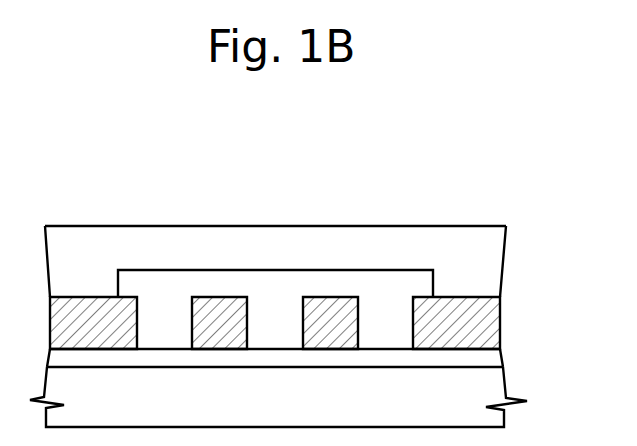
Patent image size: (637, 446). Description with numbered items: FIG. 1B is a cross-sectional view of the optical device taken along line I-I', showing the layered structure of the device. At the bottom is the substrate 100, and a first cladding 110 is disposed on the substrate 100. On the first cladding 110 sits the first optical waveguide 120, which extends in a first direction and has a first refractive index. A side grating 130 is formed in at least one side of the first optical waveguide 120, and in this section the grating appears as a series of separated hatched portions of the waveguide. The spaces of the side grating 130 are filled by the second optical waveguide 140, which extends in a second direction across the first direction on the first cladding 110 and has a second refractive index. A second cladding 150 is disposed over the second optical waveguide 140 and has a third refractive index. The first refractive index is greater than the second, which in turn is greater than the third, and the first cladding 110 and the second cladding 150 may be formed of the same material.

The substrate 100 is at (494, 388).
The first cladding 110 is at (494, 358).
The first optical waveguide 120 is at (494, 322).
The side grating 130 is at (330, 292).
The second optical waveguide 140 is at (167, 290).
The second cladding 150 is at (494, 256).